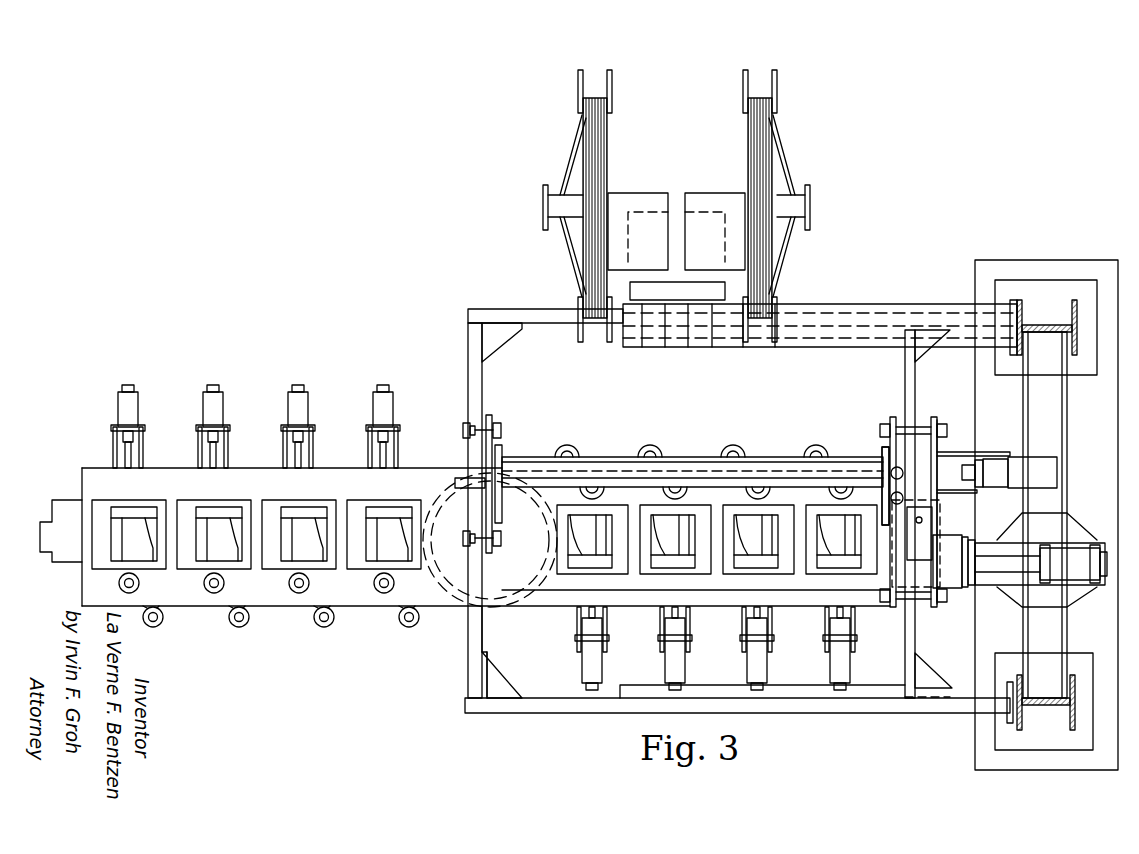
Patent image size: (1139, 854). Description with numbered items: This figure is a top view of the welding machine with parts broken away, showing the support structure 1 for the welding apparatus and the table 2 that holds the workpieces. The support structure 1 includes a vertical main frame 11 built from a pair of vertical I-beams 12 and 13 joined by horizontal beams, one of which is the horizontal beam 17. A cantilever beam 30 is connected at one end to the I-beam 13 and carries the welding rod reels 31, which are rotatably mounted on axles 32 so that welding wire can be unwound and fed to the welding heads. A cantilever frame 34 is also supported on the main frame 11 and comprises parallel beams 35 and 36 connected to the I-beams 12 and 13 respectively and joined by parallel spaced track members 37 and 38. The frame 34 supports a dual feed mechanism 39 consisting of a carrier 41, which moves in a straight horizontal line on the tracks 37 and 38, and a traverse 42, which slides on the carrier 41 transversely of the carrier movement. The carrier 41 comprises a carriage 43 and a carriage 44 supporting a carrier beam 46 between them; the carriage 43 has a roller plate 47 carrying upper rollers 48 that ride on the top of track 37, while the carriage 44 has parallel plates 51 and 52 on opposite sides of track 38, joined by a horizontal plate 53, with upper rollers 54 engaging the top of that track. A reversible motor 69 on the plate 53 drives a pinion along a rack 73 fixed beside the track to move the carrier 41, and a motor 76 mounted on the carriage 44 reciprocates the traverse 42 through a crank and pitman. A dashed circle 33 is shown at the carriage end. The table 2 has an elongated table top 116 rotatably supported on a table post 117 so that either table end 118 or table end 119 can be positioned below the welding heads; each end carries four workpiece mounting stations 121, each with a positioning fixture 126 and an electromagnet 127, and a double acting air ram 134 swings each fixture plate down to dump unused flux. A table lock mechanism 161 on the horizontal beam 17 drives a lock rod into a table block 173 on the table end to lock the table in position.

The support structure 1 is at (1068, 412).
The table 2 is at (465, 467).
The vertical main frame 11 is at (1070, 312).
The vertical I-beam 12 is at (1040, 708).
The vertical I-beam 13 is at (1040, 342).
The horizontal beam 17 is at (1060, 640).
The cantilever beam 30 is at (855, 296).
The welding rod reel 31 is at (570, 158).
The axle 32 is at (562, 222).
The dashed circle outline 33 is at (490, 540).
The cantilever frame 34 is at (466, 660).
The parallel beam 35 is at (552, 714).
The parallel beam 36 is at (528, 308).
The track member 37 is at (483, 390).
The track member 38 is at (904, 376).
The dual feed mechanism 39 is at (936, 418).
The carrier 41 is at (700, 456).
The traverse 42 is at (597, 470).
The carriage 43 is at (502, 447).
The carriage 44 is at (884, 447).
The carrier beam 46 is at (772, 457).
The roller plate 47 is at (492, 415).
The upper roller 48 is at (464, 428).
The parallel plate 51 is at (890, 420).
The parallel plate 52 is at (940, 440).
The horizontal plate 53 is at (932, 505).
The upper roller 54 is at (908, 420).
The reversible motor 69 is at (925, 552).
The rack 73 is at (925, 483).
The motor 76 is at (1038, 457).
The table top 116 is at (536, 609).
The table post 117 is at (552, 580).
The table end 118 is at (730, 608).
The table end 119 is at (276, 607).
The workpiece mounting station 121 is at (140, 505).
The positioning fixture 126 is at (216, 508).
The electromagnet 127 is at (163, 620).
The double acting air ram 134 is at (225, 410).
The table lock mechanism 161 is at (986, 543).
The table block 173 is at (62, 512).